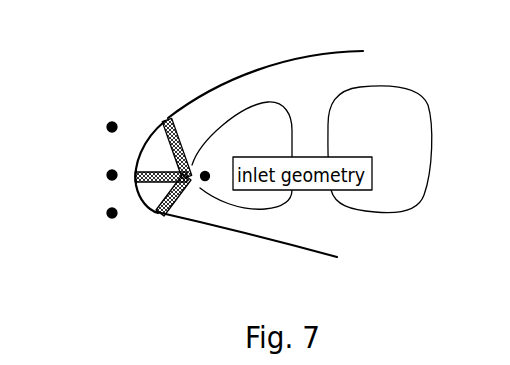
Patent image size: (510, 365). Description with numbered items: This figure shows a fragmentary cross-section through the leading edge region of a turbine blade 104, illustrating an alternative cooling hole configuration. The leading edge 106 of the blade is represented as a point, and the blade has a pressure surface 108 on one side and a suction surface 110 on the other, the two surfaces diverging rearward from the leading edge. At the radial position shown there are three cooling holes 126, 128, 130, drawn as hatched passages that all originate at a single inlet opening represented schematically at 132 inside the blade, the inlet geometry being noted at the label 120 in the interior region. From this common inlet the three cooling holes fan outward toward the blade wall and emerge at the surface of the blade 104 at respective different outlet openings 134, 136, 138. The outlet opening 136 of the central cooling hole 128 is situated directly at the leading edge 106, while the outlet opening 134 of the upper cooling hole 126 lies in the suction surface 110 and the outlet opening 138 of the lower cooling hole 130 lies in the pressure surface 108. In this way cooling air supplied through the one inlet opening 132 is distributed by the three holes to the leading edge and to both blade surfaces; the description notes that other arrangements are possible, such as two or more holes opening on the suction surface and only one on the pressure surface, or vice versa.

The turbine blade 104 is at (340, 232).
The leading edge 106 is at (135, 178).
The pressure surface 108 is at (252, 236).
The suction surface 110 is at (233, 75).
The inlet geometry region 120 is at (273, 150).
The cooling hole 126 is at (180, 138).
The cooling hole 128 is at (148, 156).
The cooling hole 130 is at (178, 200).
The inlet opening 132 is at (209, 177).
The outlet opening 134 is at (110, 124).
The outlet opening 136 is at (107, 176).
The outlet opening 138 is at (112, 218).